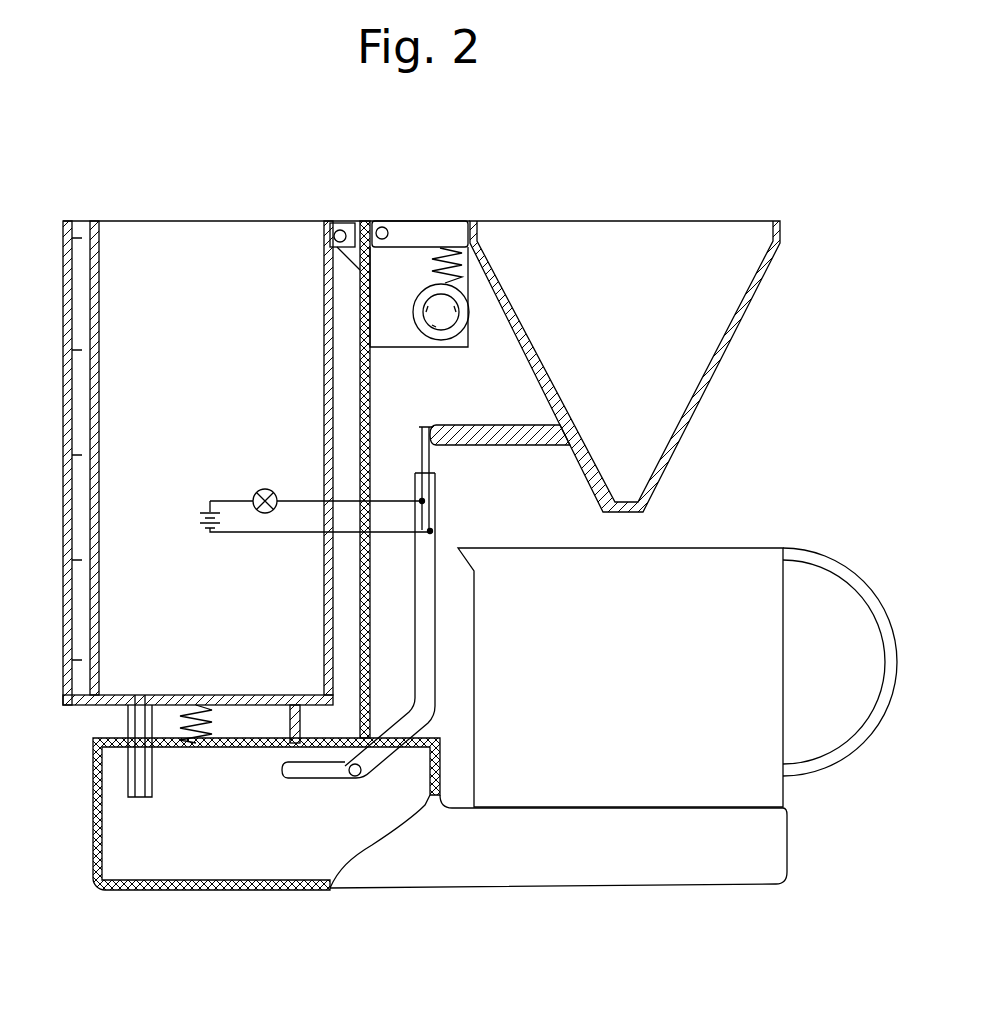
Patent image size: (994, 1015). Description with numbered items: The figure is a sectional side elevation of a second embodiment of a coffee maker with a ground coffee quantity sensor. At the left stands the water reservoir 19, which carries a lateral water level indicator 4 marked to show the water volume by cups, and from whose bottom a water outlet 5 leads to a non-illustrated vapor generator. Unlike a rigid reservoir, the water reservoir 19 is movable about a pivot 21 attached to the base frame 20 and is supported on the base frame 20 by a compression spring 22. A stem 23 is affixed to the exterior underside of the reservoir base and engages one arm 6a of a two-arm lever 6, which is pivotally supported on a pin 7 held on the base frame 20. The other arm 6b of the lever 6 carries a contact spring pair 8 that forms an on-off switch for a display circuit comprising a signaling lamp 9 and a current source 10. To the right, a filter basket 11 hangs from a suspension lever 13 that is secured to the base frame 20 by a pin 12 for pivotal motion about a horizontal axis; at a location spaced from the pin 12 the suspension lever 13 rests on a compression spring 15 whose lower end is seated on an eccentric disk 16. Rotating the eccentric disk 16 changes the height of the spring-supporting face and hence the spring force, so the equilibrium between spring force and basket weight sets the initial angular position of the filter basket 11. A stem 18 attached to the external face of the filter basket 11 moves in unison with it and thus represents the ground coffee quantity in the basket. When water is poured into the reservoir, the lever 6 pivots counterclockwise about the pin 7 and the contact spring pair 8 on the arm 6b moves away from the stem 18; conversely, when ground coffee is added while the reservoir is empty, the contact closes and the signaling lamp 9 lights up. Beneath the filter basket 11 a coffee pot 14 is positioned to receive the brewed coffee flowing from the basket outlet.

The water level indicator 4 is at (78, 230).
The water outlet 5 is at (147, 800).
The two-arm lever 6 is at (432, 548).
The arm of the two-arm lever 6a is at (317, 770).
The arm of the two-arm lever 6b is at (427, 640).
The pin 7 is at (347, 775).
The contact spring pair 8 is at (420, 445).
The signaling lamp 9 is at (260, 492).
The current source 10 is at (203, 532).
The filter basket 11 is at (690, 233).
The pin 12 is at (385, 223).
The suspension lever 13 is at (422, 227).
The coffee pot 14 is at (735, 572).
The compression spring 15 is at (458, 263).
The eccentric disk 16 is at (463, 315).
The stem 18 is at (517, 435).
The water reservoir 19 is at (208, 240).
The base frame 20 is at (93, 853).
The pivot 21 is at (342, 220).
The compression spring 22 is at (210, 745).
The stem 23 is at (285, 760).